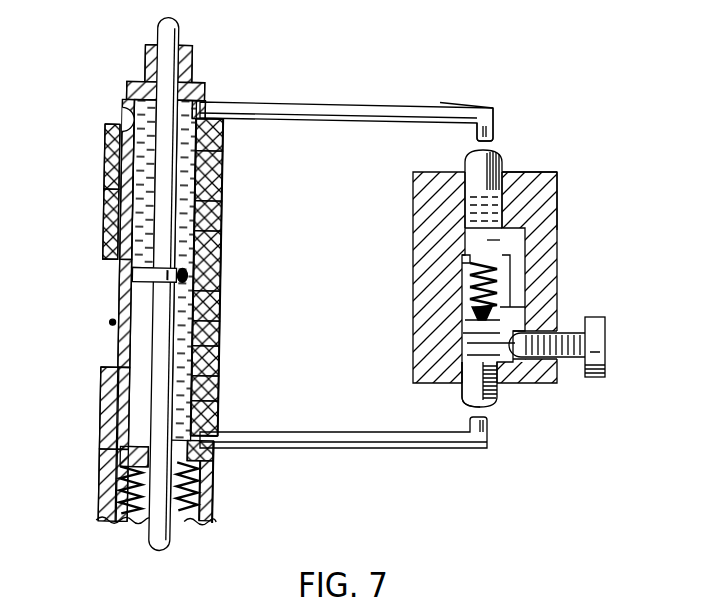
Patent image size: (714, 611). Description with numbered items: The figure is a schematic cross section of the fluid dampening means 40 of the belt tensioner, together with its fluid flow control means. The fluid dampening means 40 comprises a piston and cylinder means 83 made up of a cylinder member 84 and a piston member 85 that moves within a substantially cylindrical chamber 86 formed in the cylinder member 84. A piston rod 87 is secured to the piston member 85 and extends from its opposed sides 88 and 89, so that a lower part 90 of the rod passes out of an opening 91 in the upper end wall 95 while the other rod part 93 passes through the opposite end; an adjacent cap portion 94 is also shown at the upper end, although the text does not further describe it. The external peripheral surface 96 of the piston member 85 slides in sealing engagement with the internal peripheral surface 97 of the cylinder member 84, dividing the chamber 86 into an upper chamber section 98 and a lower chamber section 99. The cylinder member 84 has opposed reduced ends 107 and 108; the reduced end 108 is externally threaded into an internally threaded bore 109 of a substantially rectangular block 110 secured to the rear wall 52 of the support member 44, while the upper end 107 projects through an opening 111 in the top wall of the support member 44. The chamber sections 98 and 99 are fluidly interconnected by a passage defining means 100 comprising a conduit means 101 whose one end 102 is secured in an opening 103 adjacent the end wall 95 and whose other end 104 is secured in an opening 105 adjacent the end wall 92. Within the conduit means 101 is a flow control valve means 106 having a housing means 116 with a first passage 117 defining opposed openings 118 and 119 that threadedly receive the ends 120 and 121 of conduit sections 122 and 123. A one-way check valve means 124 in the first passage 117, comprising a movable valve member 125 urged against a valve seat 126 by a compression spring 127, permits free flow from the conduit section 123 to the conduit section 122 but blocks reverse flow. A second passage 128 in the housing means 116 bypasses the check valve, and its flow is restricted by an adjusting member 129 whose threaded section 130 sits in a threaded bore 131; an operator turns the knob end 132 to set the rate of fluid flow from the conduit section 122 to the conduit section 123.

The fluid dampening means 40 is at (100, 147).
The support member 44 is at (215, 364).
The rear wall 52 is at (207, 508).
The piston and cylinder means 83 is at (112, 323).
The cylinder member 84 is at (188, 209).
The piston member 85 is at (180, 275).
The cylindrical chamber 86 is at (208, 188).
The piston rod 87 is at (150, 230).
The side of piston member 88 is at (220, 243).
The side of piston member 89 is at (220, 307).
The lower part of piston rod 90 is at (216, 390).
The opening 91 is at (118, 480).
The end wall 92 is at (203, 487).
The piston rod part 93 is at (158, 165).
The cap 94 is at (167, 63).
The upper end wall 95 is at (202, 83).
The external peripheral surface 96 is at (128, 275).
The internal peripheral surface 97 is at (218, 332).
The upper chamber section 98 is at (143, 185).
The lower chamber section 99 is at (120, 373).
The passage defining means 100 is at (497, 102).
The conduit means 101 is at (400, 104).
The end of conduit means 102 is at (203, 110).
The opening 103 is at (224, 134).
The other end of conduit means 104 is at (200, 428).
The opening 105 is at (200, 462).
The flow control valve means 106 is at (580, 204).
The upper reduced end 107 is at (190, 51).
The lower reduced end 108 is at (108, 512).
The internally threaded bore 109 is at (178, 507).
The rectangular block 110 is at (118, 467).
The opening 111 is at (129, 122).
The housing means 116 is at (553, 173).
The first passage 117 is at (470, 183).
The opening 118 is at (528, 172).
The opening 119 is at (462, 402).
The conduit end 120 is at (468, 187).
The conduit end 121 is at (498, 385).
The conduit section 122 is at (468, 108).
The conduit section 123 is at (437, 452).
The one-way check valve means 124 is at (470, 275).
The movable valve member 125 is at (467, 292).
The valve seat 126 is at (470, 318).
The compression spring 127 is at (468, 257).
The second passage 128 is at (523, 270).
The adjusting member 129 is at (577, 333).
The threaded section 130 is at (571, 356).
The threaded bore 131 is at (545, 325).
The knob end 132 is at (598, 338).